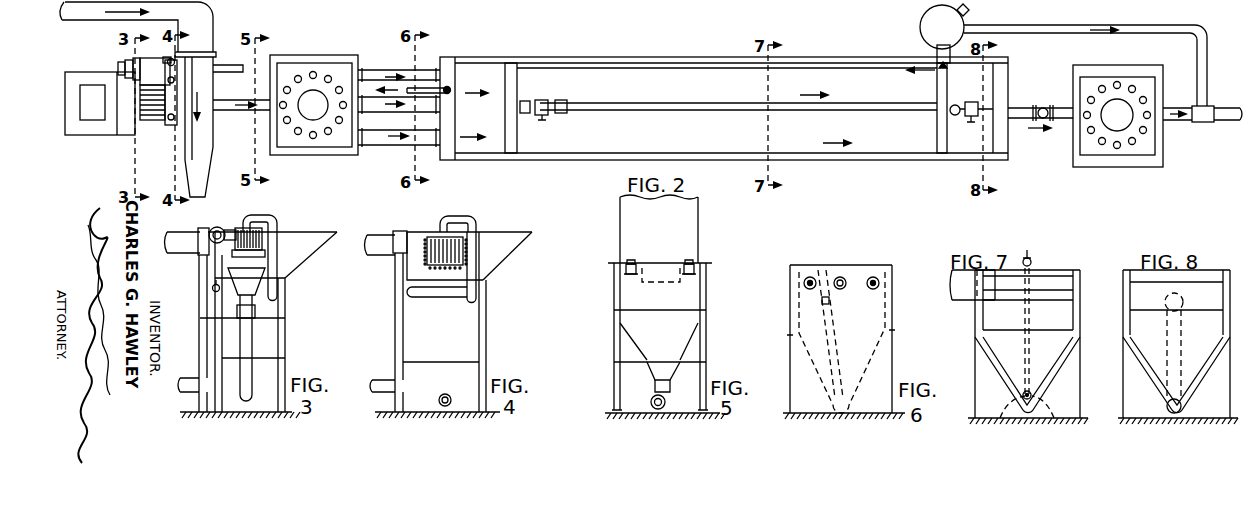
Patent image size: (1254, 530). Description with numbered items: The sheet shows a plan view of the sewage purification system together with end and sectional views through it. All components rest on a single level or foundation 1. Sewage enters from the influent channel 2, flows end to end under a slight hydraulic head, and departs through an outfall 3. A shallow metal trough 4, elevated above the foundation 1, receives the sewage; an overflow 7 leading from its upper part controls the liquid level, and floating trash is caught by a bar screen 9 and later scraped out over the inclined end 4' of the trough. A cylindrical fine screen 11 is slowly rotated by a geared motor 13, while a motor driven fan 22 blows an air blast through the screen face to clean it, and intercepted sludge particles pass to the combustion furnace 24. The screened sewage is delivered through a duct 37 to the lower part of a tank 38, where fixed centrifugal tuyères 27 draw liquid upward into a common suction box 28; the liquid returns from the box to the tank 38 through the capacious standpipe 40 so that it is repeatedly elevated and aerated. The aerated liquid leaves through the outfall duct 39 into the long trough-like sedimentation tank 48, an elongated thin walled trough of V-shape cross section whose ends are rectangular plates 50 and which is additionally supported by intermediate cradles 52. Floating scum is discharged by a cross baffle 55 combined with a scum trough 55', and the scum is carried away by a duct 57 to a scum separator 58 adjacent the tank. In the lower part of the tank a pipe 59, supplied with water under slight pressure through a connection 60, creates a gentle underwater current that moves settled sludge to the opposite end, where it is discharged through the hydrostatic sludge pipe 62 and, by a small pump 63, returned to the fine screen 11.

In FIG. 3, the foundation 1 is at (188, 413).
In FIG. 4, the foundation 1 is at (380, 412).
In FIG. 5, the foundation 1 is at (603, 412).
In FIG. 6, the foundation 1 is at (790, 412).
In FIG. 7, the foundation 1 is at (972, 417).
In FIG. 8, the foundation 1 is at (1120, 417).
In FIG. 3, the influent channel 2 is at (182, 253).
In FIG. 4, the influent channel 2 is at (383, 233).
In FIG. 2, the outfall 3 is at (1220, 117).
In FIG. 2, the trough 4 is at (211, 127).
In FIG. 3, the trough 4 is at (268, 305).
In FIG. 4, the trough 4 is at (467, 307).
In FIG. 3, the inclined end 4' is at (311, 255).
In FIG. 4, the inclined end 4' is at (514, 256).
In FIG. 2, the overflow 7 is at (165, 58).
In FIG. 3, the overflow 7 is at (200, 262).
In FIG. 4, the overflow 7 is at (397, 270).
In FIG. 4, the bar screen 9 is at (435, 237).
In FIG. 2, the fine screen 11 is at (158, 106).
In FIG. 3, the fine screen 11 is at (237, 228).
In FIG. 2, the motor 13 is at (177, 67).
In FIG. 2, the fan 22 is at (123, 65).
In FIG. 3, the fan 22 is at (214, 229).
In FIG. 2, the combustion furnace 24 is at (103, 127).
In FIG. 2, the centrifugal tuyères 27 is at (329, 75).
In FIG. 5, the centrifugal tuyères 27 is at (628, 262).
In FIG. 2, the suction box 28 is at (305, 70).
In FIG. 5, the suction box 28 is at (687, 220).
In FIG. 2, the duct 37 is at (250, 108).
In FIG. 3, the duct 37 is at (245, 353).
In FIG. 4, the duct 37 is at (450, 387).
In FIG. 5, the duct 37 is at (652, 400).
In FIG. 5, the tank 38 is at (630, 333).
In FIG. 2, the outfall duct 39 is at (402, 137).
In FIG. 6, the outfall duct 39 is at (842, 278).
In FIG. 5, the standpipe 40 is at (644, 268).
In FIG. 2, the sedimentation tank 48 is at (636, 60).
In FIG. 6, the sedimentation tank 48 is at (890, 268).
In FIG. 7, the sedimentation tank 48 is at (1075, 273).
In FIG. 8, the sedimentation tank 48 is at (1222, 272).
In FIG. 6, the end plate 50 is at (790, 370).
In FIG. 7, the end plate 50 is at (975, 358).
In FIG. 8, the end plate 50 is at (1127, 368).
In FIG. 7, the cradles 52 is at (1043, 407).
In FIG. 2, the cross baffle 55 is at (726, 108).
In FIG. 2, the scum trough 55' is at (727, 52).
In FIG. 2, the duct 57 is at (935, 55).
In FIG. 7, the duct 57 is at (968, 293).
In FIG. 2, the scum separator 58 is at (928, 18).
In FIG. 2, the pipe 59 is at (632, 110).
In FIG. 2, the connection 60 is at (972, 104).
In FIG. 7, the connection 60 is at (1032, 258).
In FIG. 2, the hydrostatic sludge pipe 62 is at (230, 72).
In FIG. 3, the hydrostatic sludge pipe 62 is at (215, 298).
In FIG. 4, the hydrostatic sludge pipe 62 is at (443, 296).
In FIG. 6, the hydrostatic sludge pipe 62 is at (823, 268).
In FIG. 3, the pump 63 is at (278, 287).
In FIG. 4, the pump 63 is at (478, 290).